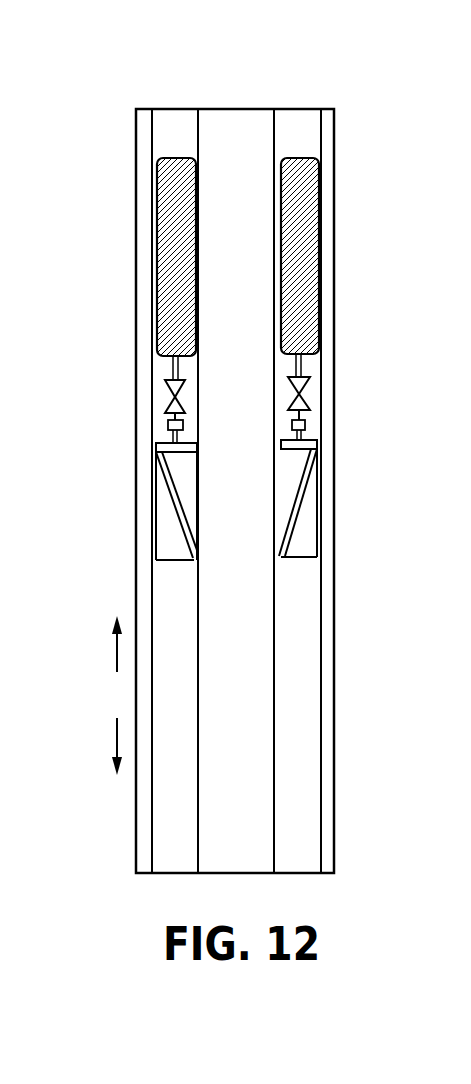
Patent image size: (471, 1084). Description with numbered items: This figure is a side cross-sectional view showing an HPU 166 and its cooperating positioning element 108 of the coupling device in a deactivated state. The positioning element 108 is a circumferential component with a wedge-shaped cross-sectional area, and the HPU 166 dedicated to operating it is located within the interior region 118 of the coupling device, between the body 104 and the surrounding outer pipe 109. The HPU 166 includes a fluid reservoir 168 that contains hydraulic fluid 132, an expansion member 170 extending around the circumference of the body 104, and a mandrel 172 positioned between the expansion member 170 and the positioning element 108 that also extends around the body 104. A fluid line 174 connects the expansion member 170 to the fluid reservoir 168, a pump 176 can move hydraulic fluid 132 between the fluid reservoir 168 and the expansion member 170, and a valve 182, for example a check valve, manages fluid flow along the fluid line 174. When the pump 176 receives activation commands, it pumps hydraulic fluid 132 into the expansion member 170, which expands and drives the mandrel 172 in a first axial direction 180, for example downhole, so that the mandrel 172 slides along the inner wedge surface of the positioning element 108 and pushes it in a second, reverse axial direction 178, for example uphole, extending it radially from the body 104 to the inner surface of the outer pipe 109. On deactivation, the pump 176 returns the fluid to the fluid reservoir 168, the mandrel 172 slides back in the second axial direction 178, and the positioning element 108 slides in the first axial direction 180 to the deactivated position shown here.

The body 104 is at (293, 514).
The positioning element 108 is at (231, 497).
The outer pipe 109 is at (269, 514).
The interior region 118 is at (308, 840).
The hydraulic fluid 132 is at (179, 158).
The HPU 166 is at (293, 514).
The fluid reservoir 168 is at (239, 200).
The expansion member 170 is at (156, 447).
The mandrel 172 is at (186, 489).
The fluid line 174 is at (157, 435).
The pump 176 is at (165, 392).
The second axial direction 178 is at (112, 649).
The first axial direction 180 is at (112, 752).
The valve 182 is at (166, 426).